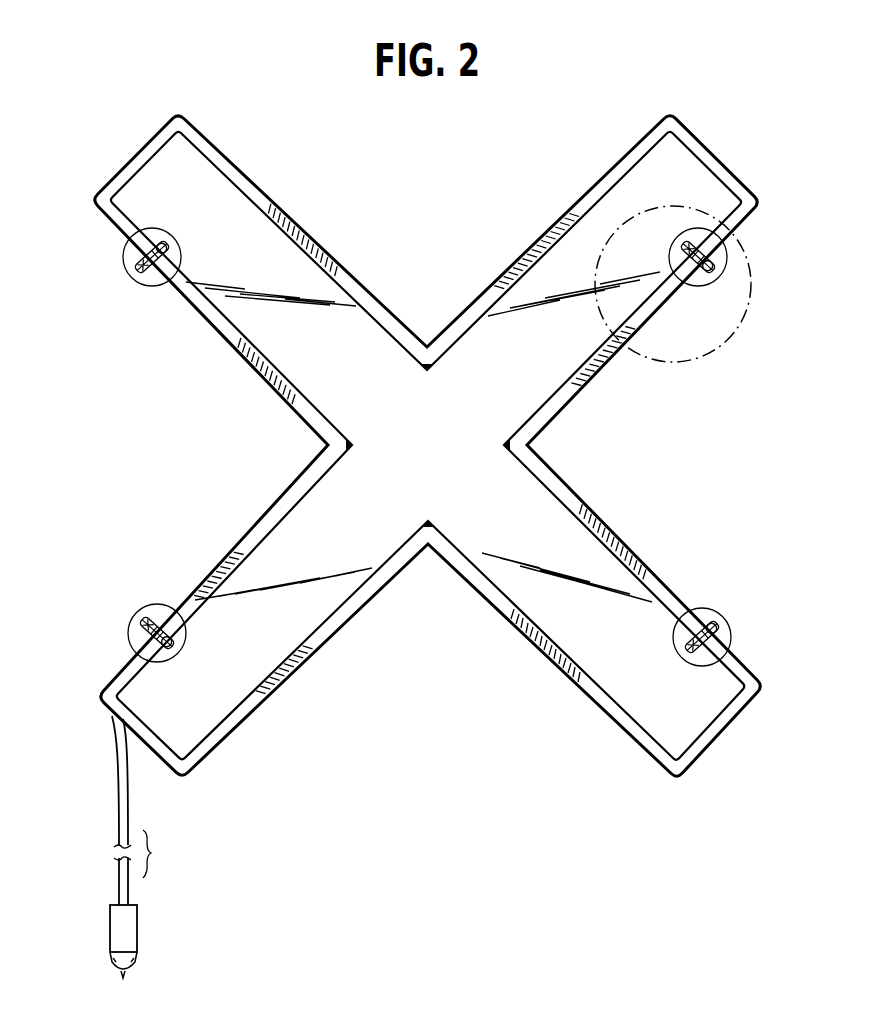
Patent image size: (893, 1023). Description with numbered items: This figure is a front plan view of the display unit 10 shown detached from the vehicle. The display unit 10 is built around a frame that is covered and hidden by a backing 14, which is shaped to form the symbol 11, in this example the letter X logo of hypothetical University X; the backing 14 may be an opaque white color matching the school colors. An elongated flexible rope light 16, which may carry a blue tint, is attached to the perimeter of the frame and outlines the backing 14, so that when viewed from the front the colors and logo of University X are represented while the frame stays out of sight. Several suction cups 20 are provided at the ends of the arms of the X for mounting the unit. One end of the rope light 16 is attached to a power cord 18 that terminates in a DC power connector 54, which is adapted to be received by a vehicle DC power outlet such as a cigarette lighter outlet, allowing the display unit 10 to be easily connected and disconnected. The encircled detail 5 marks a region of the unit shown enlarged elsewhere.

The display unit 10 is at (573, 186).
The symbol 11 is at (427, 304).
The backing 14 is at (685, 180).
The elongated flexible lighting strip (rope light) 16 is at (209, 142).
The suction cups 20 is at (150, 285).
The detail view circle (FIG. 5) 5 is at (724, 296).
The power cord 18 is at (120, 797).
The DC power connector 54 is at (127, 930).